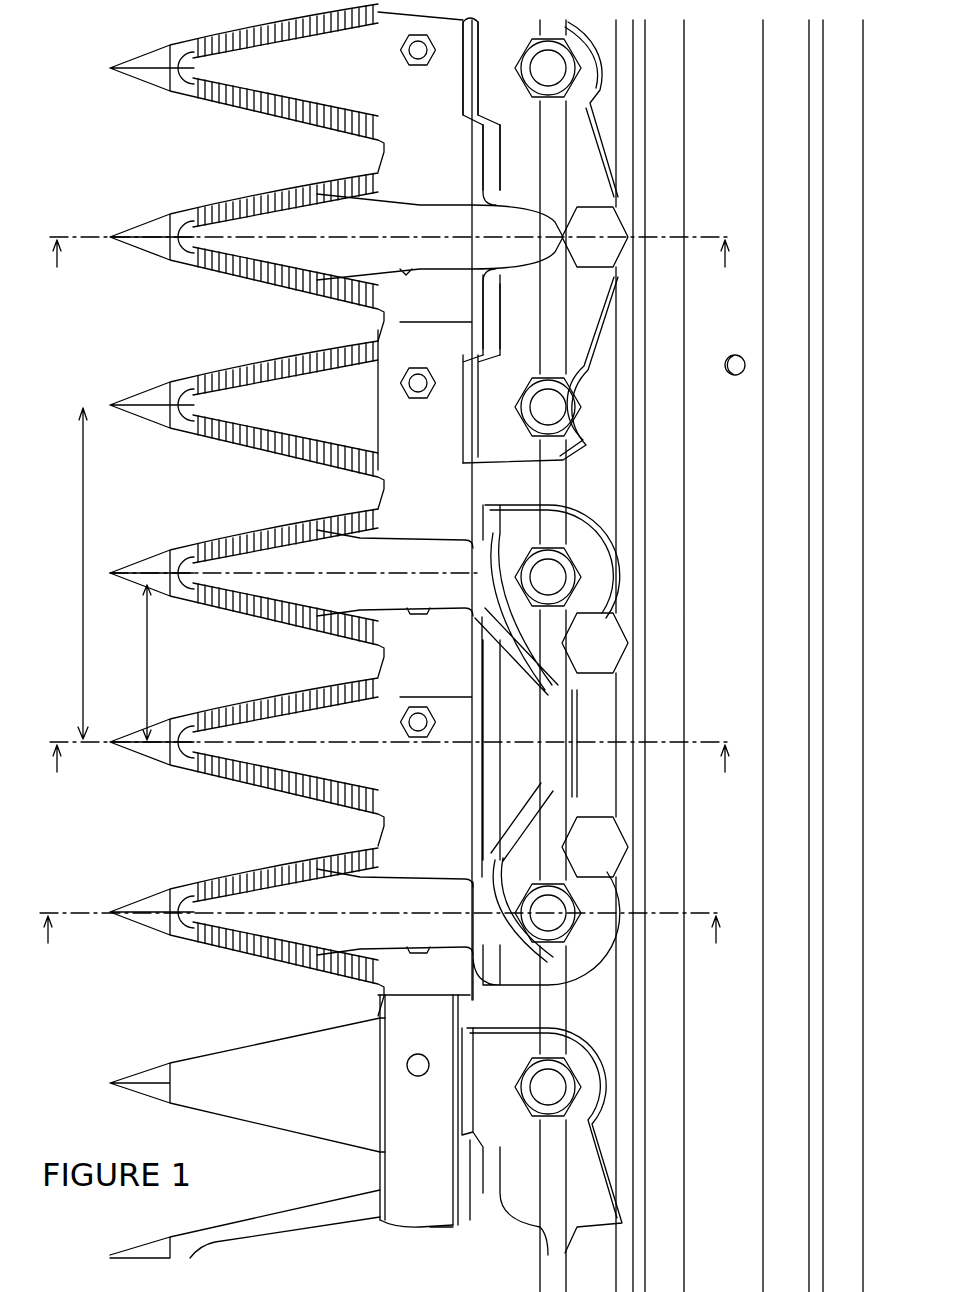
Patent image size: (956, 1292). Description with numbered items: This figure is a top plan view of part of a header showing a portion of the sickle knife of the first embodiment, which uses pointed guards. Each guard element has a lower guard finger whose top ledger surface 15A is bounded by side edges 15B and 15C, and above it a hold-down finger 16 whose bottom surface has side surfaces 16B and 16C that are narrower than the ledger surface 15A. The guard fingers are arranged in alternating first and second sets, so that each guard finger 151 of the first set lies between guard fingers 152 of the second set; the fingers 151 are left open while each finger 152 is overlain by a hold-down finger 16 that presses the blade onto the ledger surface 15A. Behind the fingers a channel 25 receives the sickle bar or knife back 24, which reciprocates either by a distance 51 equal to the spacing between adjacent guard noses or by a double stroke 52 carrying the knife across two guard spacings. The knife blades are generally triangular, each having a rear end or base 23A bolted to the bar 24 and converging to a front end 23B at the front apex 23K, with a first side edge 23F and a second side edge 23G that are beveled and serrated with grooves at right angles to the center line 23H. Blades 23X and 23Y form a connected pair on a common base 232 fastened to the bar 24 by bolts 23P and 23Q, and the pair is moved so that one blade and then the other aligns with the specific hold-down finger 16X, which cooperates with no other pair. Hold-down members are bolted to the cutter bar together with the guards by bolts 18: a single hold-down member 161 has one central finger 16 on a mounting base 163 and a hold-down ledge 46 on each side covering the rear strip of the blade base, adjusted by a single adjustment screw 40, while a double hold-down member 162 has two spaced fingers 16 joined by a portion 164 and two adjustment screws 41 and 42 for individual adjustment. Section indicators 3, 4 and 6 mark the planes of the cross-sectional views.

The section line 3- 3 is at (380, 948).
The section line 4- 4 is at (389, 777).
The section line 6- 6 is at (389, 272).
The ledger surface 15A is at (279, 1126).
The side edge of ledger surface 15B is at (279, 1126).
The side edge of ledger surface 15C is at (193, 1110).
The hold-down finger 16 is at (291, 594).
The hold-down finger 16X is at (262, 645).
The side surface of hold-down finger bottom surface 16B is at (233, 877).
The side surface of hold-down finger bottom surface 16C is at (245, 945).
The bolts 18 is at (568, 556).
The sickle bar 24 is at (400, 1018).
The channel 25 is at (300, 1032).
The rear end or base of blade 23A is at (355, 767).
The front end of blade 23B is at (235, 300).
The side edge of blade 23F is at (275, 792).
The second side edge of blade 23G is at (360, 640).
The center line of blade 23H is at (320, 773).
The front apex of blade 23K is at (167, 768).
The bolt 23P is at (430, 336).
The bolt 23Q is at (372, 410).
The first blade of connected pair 23X is at (403, 468).
The second blade of connected pair 23Y is at (405, 468).
The common base 232 is at (412, 468).
The adjustment screw 40 is at (605, 222).
The adjustment screw 41 is at (608, 643).
The adjustment screw 42 is at (608, 838).
The hold-down ledge 46 is at (465, 92).
The reciprocation distance S1 51 is at (160, 662).
The reciprocation stroke S2 52 is at (83, 507).
The guard finger of first set 151 is at (206, 112).
The guard finger of second set 152 is at (246, 286).
The single hold-down member 161 is at (603, 242).
The double hold-down member 162 is at (600, 590).
The mounting base 163 is at (600, 320).
The hold-down bar 164 is at (565, 722).